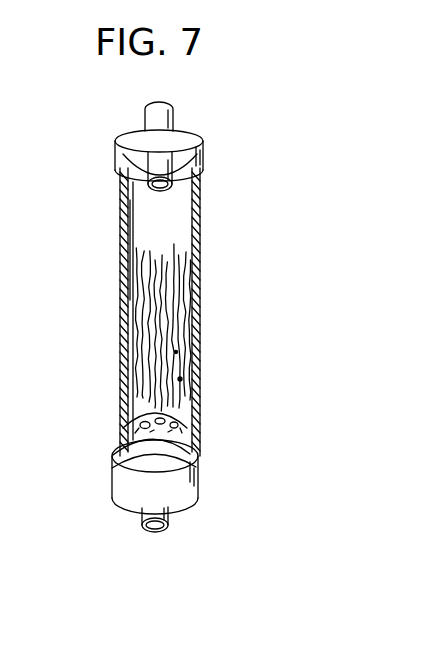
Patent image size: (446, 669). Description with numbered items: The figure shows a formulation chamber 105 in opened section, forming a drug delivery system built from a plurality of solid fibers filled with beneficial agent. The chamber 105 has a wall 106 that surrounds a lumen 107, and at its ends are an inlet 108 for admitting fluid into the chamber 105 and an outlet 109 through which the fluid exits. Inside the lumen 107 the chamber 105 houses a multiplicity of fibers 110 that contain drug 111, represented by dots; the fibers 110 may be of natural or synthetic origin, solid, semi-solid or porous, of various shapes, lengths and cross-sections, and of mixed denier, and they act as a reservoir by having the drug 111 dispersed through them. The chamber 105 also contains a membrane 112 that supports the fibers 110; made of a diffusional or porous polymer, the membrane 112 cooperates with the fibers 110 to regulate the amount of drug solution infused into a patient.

The formulation chamber 105 is at (207, 202).
The wall 106 is at (197, 262).
The lumen 107 is at (143, 214).
The inlet 108 is at (121, 148).
The outlet 109 is at (127, 470).
The fibers 110 is at (184, 331).
The drug 111 is at (180, 379).
The membrane 112 is at (182, 428).